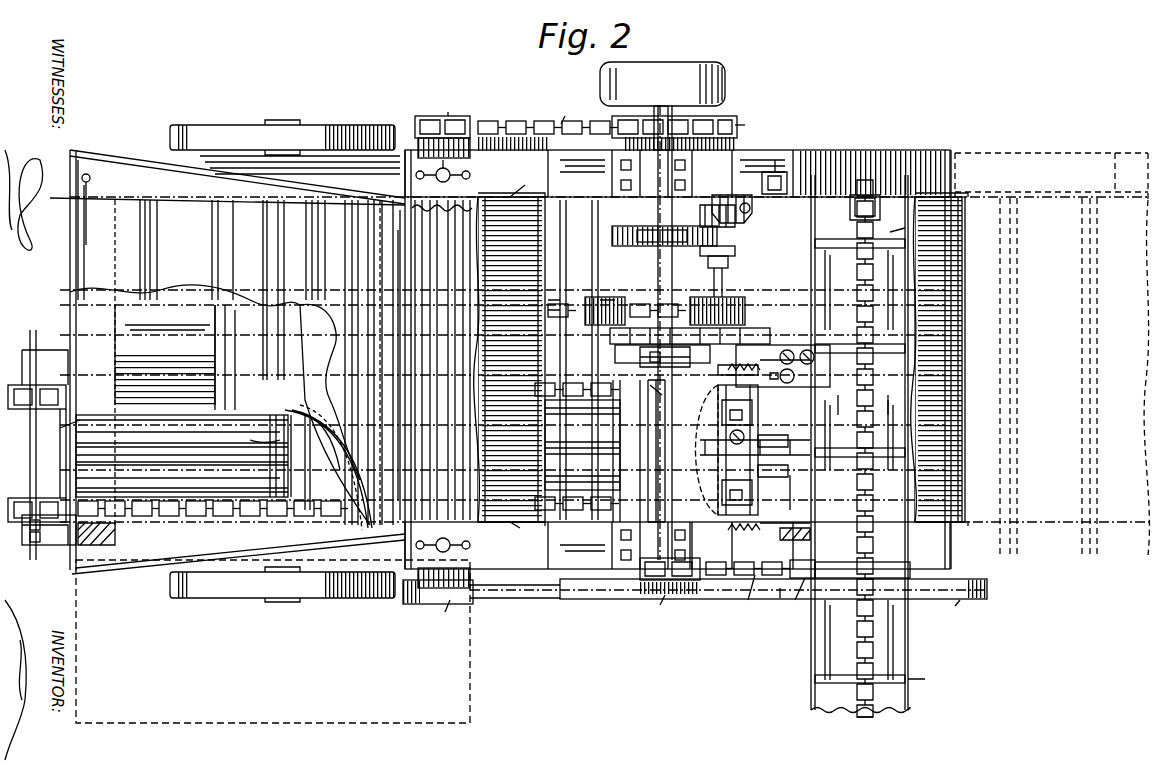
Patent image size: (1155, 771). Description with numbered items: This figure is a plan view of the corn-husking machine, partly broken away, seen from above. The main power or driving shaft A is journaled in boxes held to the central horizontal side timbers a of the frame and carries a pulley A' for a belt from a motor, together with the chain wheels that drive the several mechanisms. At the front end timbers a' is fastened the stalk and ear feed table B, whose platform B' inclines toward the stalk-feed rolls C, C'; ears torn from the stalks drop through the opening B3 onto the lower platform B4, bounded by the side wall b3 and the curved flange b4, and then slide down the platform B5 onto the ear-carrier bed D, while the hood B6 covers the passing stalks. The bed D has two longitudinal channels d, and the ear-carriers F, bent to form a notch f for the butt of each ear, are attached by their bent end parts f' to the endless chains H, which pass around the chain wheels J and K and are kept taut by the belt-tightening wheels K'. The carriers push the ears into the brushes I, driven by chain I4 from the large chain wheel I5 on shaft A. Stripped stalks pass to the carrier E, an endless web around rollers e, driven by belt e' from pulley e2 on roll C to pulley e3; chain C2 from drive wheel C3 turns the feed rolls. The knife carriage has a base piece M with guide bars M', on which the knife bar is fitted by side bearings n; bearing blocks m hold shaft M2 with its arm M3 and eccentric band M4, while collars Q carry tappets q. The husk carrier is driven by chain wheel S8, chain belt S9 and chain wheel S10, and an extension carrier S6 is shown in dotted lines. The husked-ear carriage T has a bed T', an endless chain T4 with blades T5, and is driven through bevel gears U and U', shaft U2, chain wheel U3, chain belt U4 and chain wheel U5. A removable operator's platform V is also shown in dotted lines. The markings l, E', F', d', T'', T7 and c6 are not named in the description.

The central horizontal side timbers a is at (678, 359).
The stalk and ear feed table B is at (237, 348).
The platform B' is at (227, 361).
The opening B3 is at (220, 403).
The lower platform B4 is at (247, 357).
The lower platform B5 is at (152, 355).
The hood B6 is at (390, 365).
The ear-carrier bed D is at (183, 456).
The longitudinal grooves or channels d is at (324, 454).
The side flange or wall b4 is at (265, 435).
The ear-carriers F is at (267, 456).
The notch f is at (474, 456).
The link l is at (301, 462).
The endless chains H is at (338, 450).
The chain-wheel J is at (34, 445).
The front end timbers a' is at (68, 533).
The stalk-feed roll C is at (442, 360).
The carrier E is at (509, 359).
The rollers e is at (728, 355).
The roller E' is at (938, 359).
The main power or driving shaft A is at (622, 332).
The brushes I is at (499, 394).
The chain I4 is at (586, 301).
The large chain-wheel I5 is at (687, 301).
The chain-wheel K is at (705, 422).
The belt-tightening wheels K' is at (661, 344).
The roller F' is at (592, 451).
The bent end parts f' is at (635, 384).
The bevel-gear U is at (732, 198).
The chain-wheel U5 is at (664, 227).
The bevel-gear U' is at (708, 214).
The chain belt U4 is at (709, 259).
The chain-wheel U3 is at (735, 257).
The shaft U2 is at (734, 282).
The base piece or plate M is at (753, 441).
The guide-bars M' is at (716, 452).
The shaft M2 is at (735, 360).
The arm M3 is at (774, 436).
The curved strap or band M4 is at (771, 476).
The side bearings n is at (722, 434).
The bearing-blocks m is at (741, 456).
The collars Q is at (779, 450).
The tappets q is at (773, 383).
The side wall b3 is at (699, 545).
The rod d' is at (788, 491).
The bed T' is at (845, 444).
The carriage T is at (855, 448).
The blades T5 is at (880, 452).
The side board T'' is at (860, 489).
The endless chain T4 is at (877, 570).
The sprocket T7 is at (780, 177).
The extension-carrier S6 is at (1052, 354).
The pulley A' is at (662, 106).
The chain C2 is at (576, 119).
The chain drive-wheel C3 is at (747, 114).
The stalk-feed roll C' is at (434, 363).
The bolt c6 is at (443, 356).
The pulley e2 is at (481, 604).
The pulley e3 is at (773, 601).
The belt e' is at (771, 601).
The chain-wheel S10 is at (670, 587).
The chain belt S9 is at (748, 586).
The chain-wheel S8 is at (848, 586).
The platform V is at (273, 641).